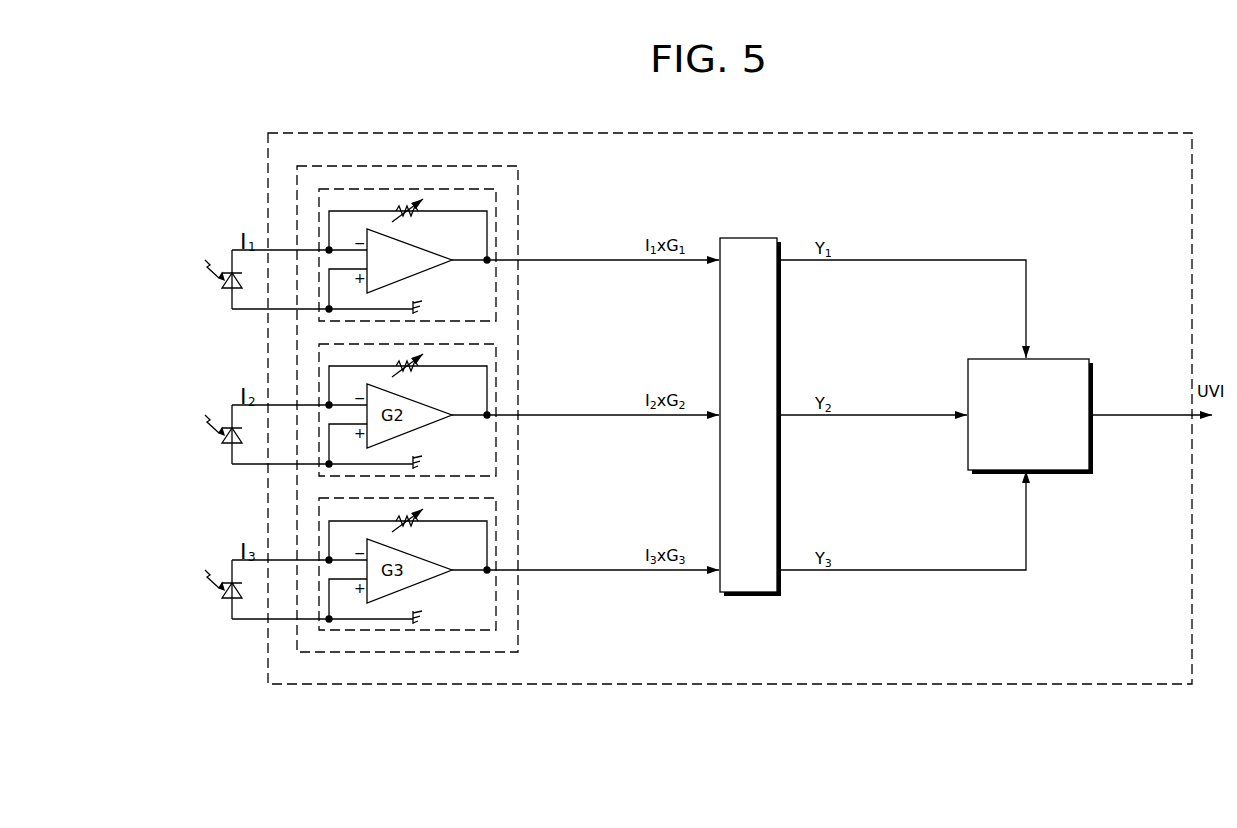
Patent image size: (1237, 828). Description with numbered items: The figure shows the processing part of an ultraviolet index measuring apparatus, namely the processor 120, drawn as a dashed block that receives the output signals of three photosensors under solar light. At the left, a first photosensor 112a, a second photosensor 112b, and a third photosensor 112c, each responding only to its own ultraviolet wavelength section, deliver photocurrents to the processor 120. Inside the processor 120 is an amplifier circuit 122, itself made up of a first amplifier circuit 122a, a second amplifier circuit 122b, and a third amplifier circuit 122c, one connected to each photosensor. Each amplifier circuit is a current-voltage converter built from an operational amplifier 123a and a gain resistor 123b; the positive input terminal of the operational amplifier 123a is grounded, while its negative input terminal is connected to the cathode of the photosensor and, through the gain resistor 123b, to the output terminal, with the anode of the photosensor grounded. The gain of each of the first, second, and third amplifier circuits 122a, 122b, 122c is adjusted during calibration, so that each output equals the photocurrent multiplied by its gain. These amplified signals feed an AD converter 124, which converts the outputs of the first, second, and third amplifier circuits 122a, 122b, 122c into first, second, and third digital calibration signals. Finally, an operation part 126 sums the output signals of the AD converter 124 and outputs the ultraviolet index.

The processor 120 is at (1063, 133).
The amplifier circuit 122 is at (518, 183).
The first amplifier circuit 122a is at (497, 220).
The second amplifier circuit 122b is at (497, 378).
The third amplifier circuit 122c is at (497, 533).
The operational amplifier 123a is at (407, 278).
The gain resistor 123b is at (407, 222).
The AD converter 124 is at (748, 238).
The operation part 126 is at (1062, 359).
The first photosensor 112a is at (228, 270).
The second photosensor 112b is at (228, 425).
The third photosensor 112c is at (228, 580).